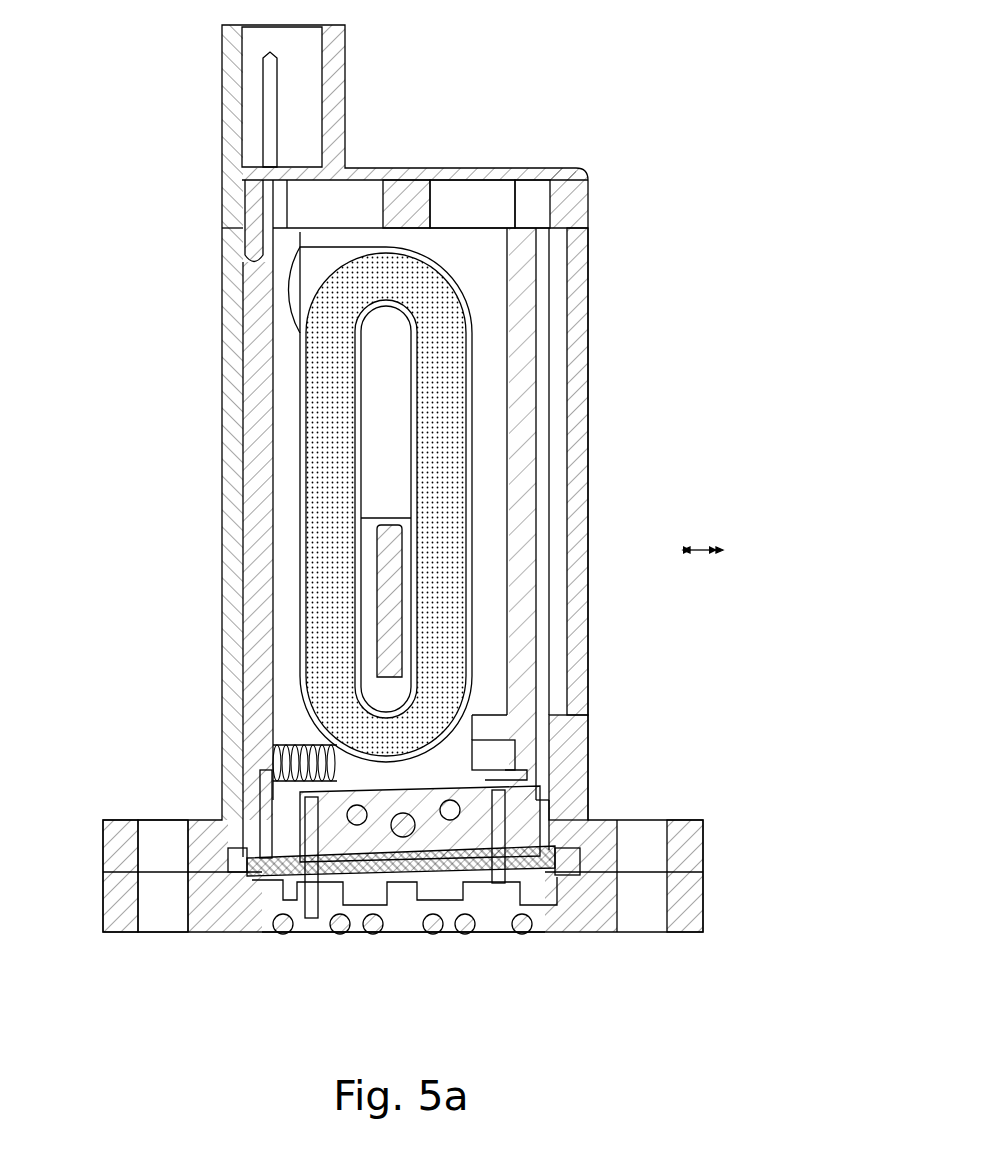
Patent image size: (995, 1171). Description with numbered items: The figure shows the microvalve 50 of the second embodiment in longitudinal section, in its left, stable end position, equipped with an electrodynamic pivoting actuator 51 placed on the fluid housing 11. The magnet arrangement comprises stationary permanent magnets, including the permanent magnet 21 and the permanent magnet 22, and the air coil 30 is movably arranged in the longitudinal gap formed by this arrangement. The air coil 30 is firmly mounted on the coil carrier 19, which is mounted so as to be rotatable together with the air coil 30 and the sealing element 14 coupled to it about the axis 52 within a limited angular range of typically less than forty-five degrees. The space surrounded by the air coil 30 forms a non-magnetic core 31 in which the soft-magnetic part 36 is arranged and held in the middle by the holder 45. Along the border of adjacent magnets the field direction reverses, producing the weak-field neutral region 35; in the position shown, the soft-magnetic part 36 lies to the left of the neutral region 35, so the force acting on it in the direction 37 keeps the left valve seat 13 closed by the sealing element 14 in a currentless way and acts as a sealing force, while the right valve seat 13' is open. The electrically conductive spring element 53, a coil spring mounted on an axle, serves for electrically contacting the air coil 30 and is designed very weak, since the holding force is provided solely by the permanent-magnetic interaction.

The microvalve 50 is at (593, 103).
The electrodynamic pivoting actuator 51 is at (612, 432).
The permanent magnet 21 is at (300, 256).
The neutral region 35 is at (400, 222).
The permanent magnet 22 is at (457, 243).
The coil carrier 19 is at (325, 480).
The air coil 30 is at (460, 335).
The holder 45 is at (330, 660).
The non-magnetic core 31 is at (365, 415).
The soft-magnetic part 36 is at (405, 570).
The direction 37 is at (703, 534).
The spring element 53 is at (268, 748).
The axis 52 is at (420, 880).
The fluid housing 11 is at (207, 908).
The left valve seat 13 is at (295, 969).
The sealing element 14 is at (373, 935).
The right valve seat 13' is at (505, 969).